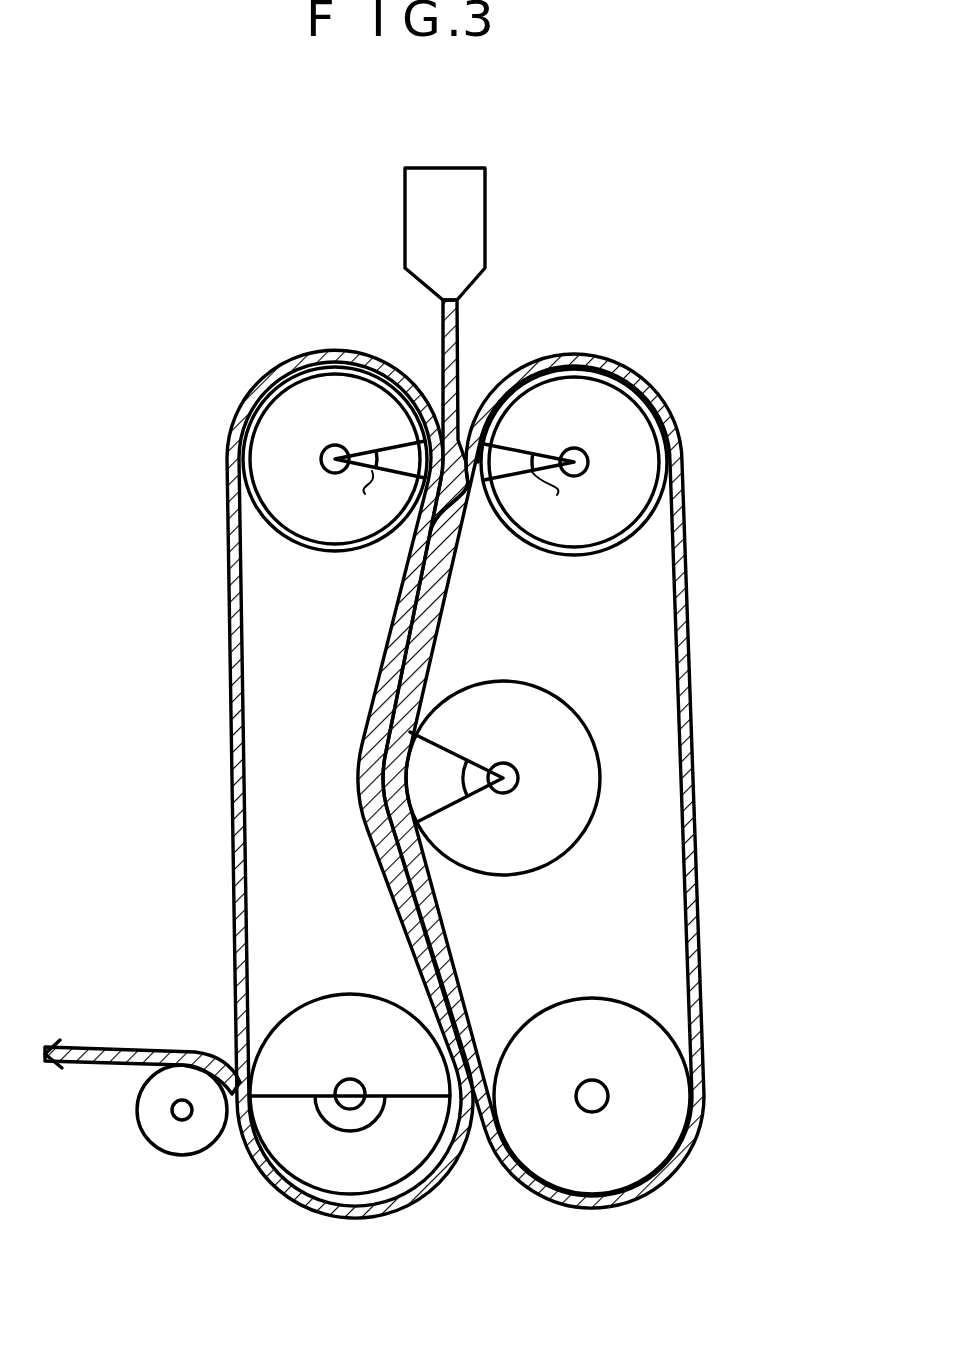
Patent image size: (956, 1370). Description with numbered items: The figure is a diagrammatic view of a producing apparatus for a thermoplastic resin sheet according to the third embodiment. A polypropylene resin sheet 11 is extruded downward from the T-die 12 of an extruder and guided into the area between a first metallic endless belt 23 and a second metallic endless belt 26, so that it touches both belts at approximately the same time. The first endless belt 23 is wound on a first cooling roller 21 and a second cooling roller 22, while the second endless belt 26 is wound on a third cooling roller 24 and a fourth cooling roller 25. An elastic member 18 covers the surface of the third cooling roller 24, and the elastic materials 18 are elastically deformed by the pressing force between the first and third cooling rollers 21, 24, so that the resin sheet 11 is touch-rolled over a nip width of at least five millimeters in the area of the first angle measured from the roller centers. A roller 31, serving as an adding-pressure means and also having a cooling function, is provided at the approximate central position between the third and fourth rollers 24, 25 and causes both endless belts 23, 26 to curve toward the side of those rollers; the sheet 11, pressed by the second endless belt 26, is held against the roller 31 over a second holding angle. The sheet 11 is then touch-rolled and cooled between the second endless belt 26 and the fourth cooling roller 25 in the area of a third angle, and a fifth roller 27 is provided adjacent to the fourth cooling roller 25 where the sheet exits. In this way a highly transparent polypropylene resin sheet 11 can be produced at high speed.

The T-die 12 is at (467, 212).
The polypropylene resin sheet 11 is at (457, 333).
The third cooling roller 24 is at (275, 420).
The first cooling roller 21 is at (634, 442).
The elastic member 18 is at (300, 548).
The second metallic endless belt 26 is at (229, 691).
The first metallic endless belt 23 is at (691, 725).
The roller 31 is at (555, 725).
The fourth cooling roller 25 is at (318, 1168).
The second cooling roller 22 is at (641, 1155).
The fifth roller 27 is at (174, 1137).